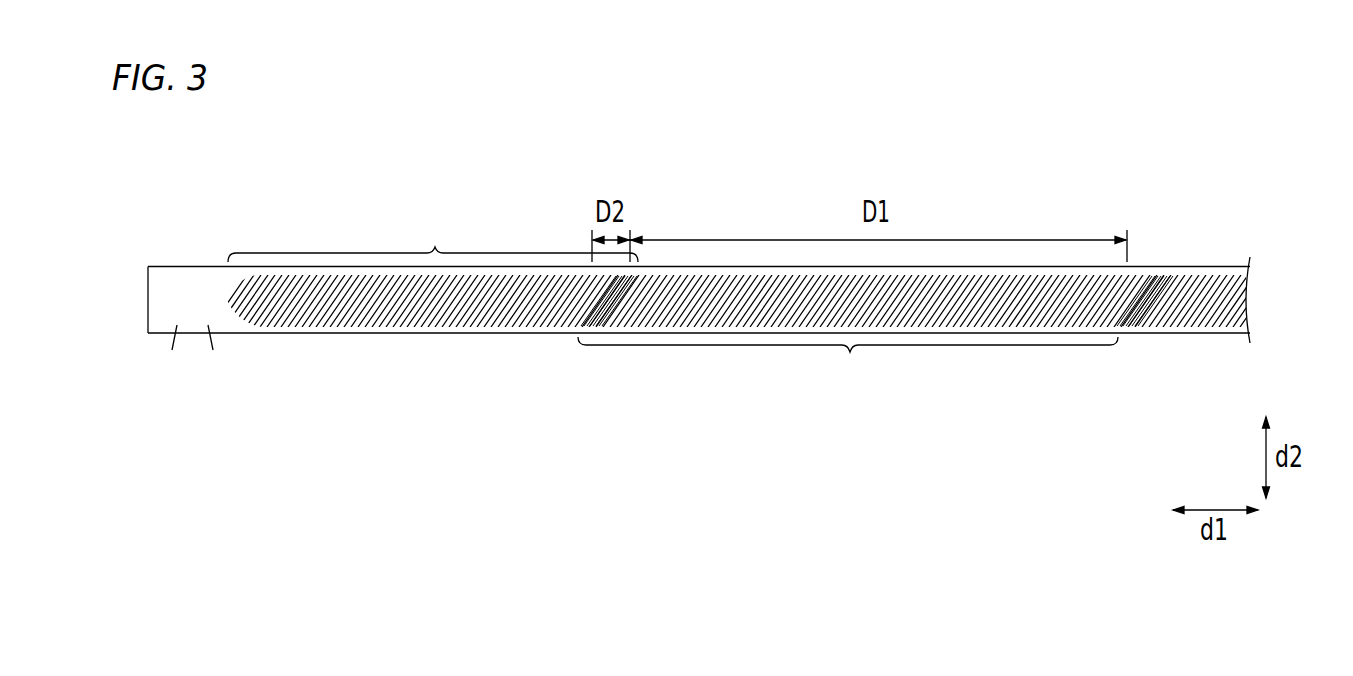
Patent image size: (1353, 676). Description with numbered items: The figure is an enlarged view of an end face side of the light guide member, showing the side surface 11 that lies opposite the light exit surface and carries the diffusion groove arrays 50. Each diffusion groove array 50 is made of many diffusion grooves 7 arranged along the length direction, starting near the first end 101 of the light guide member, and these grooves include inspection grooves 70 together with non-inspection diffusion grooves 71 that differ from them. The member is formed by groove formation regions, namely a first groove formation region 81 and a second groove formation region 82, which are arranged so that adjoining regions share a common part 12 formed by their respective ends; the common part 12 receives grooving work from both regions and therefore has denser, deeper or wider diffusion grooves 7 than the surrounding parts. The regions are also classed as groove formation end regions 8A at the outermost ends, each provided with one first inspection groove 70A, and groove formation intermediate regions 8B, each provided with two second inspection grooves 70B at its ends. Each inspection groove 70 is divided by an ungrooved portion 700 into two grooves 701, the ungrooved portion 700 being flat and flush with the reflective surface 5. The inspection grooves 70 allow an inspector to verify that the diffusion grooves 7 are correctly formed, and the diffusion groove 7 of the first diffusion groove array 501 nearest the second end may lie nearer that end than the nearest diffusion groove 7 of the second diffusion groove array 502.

The reflective surface 5 is at (210, 356).
The diffusion groove 7 is at (811, 298).
The groove formation end region 8A is at (433, 238).
The groove formation intermediate region 8B is at (848, 364).
The side surface 11 is at (171, 356).
The common part 12 is at (607, 308).
The diffusion groove array 50 is at (703, 256).
The inspection groove 70 is at (866, 353).
The first inspection groove 70A is at (580, 313).
The second inspection groove 70B is at (610, 303).
The non-inspection diffusion groove 71 is at (744, 290).
The first groove formation region 81 is at (983, 297).
The second groove formation region 82 is at (1222, 302).
The first end 101 is at (147, 302).
The first diffusion groove array 501 is at (935, 290).
The second diffusion groove array 502 is at (1223, 280).
The ungrooved portion 700 is at (590, 298).
The groove 701 is at (1145, 282).